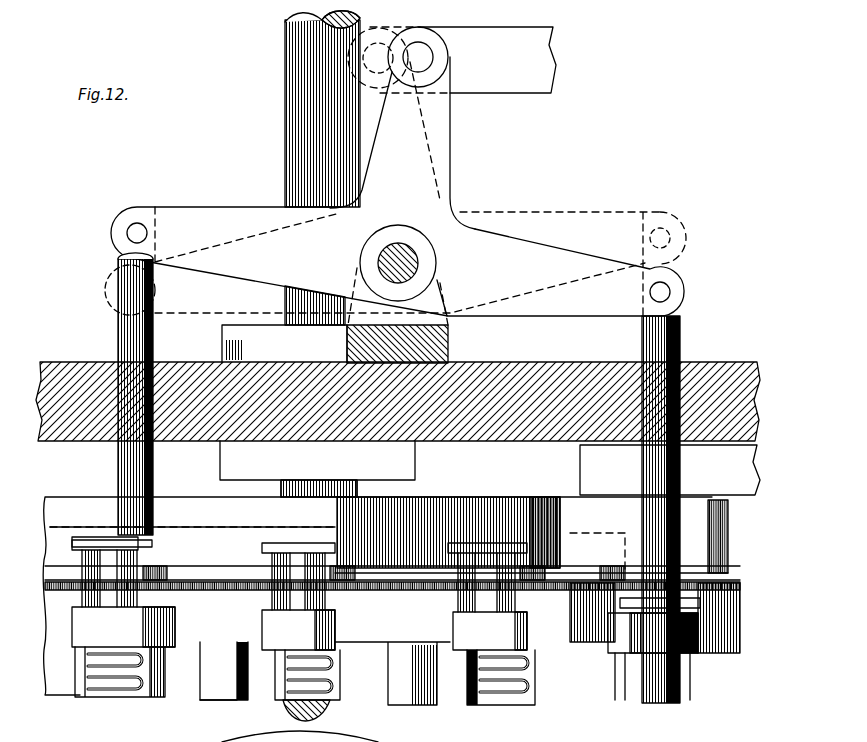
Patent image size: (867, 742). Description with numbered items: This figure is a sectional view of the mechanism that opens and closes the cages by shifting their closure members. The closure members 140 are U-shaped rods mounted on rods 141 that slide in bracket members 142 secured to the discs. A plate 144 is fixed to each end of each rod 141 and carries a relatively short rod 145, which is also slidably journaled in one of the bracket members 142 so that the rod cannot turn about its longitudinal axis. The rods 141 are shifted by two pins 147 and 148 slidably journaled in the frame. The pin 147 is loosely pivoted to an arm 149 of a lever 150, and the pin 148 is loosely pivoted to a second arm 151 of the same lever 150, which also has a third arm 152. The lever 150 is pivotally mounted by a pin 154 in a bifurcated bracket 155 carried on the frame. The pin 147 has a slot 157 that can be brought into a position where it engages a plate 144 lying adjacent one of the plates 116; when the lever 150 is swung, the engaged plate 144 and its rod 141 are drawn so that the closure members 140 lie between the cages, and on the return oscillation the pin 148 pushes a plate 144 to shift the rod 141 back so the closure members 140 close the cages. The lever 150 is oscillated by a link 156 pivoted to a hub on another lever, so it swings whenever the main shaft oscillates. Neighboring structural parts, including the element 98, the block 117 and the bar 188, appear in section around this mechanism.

The support block 98 is at (205, 694).
The plate 116 is at (183, 506).
The guide block 117 is at (706, 556).
The closure member 140 is at (112, 697).
The rod 141 is at (272, 598).
The bracket member 142 is at (176, 627).
The plate 144 is at (262, 548).
The short rod 145 is at (140, 604).
The pin 147 is at (120, 342).
The pin 148 is at (680, 364).
The arm 149 is at (180, 216).
The lever 150 is at (258, 192).
The arm 151 is at (555, 250).
The arm 152 is at (444, 146).
The pin 154 is at (396, 250).
The bifurcated bracket 155 is at (448, 347).
The link 156 is at (525, 78).
The slot 157 is at (124, 540).
The bracket bar 188 is at (736, 478).